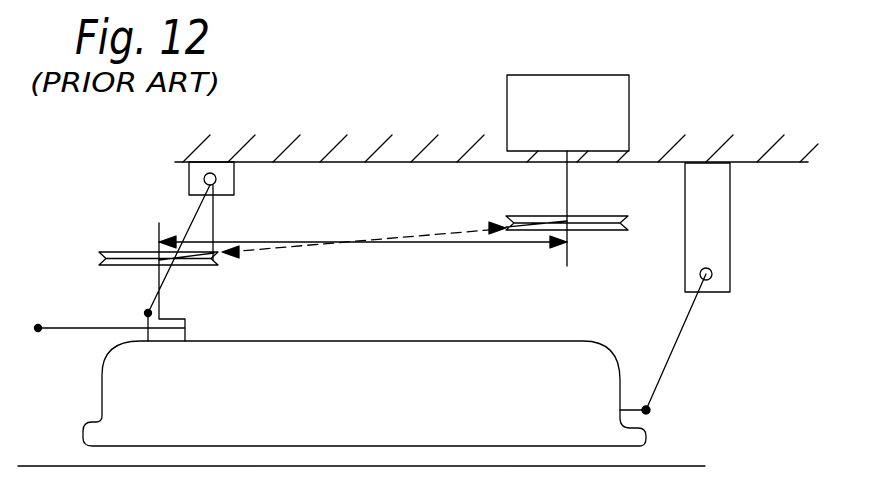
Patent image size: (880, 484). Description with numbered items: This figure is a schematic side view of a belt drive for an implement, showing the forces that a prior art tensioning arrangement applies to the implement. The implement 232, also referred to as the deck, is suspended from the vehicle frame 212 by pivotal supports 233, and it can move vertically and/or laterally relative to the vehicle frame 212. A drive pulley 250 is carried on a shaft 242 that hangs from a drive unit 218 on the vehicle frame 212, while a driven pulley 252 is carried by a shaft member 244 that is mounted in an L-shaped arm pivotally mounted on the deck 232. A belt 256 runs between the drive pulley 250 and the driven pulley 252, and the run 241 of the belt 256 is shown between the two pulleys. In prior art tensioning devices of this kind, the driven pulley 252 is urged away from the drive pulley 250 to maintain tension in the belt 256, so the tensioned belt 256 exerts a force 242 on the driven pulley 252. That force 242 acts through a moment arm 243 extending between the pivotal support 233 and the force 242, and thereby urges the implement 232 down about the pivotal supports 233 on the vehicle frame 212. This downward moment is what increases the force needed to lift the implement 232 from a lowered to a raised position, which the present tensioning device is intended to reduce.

The vehicle frame 212 is at (412, 165).
The drive motor 218 is at (582, 122).
The implement 232 is at (390, 397).
The pivotal support 233 is at (711, 270).
The belt run 241 is at (234, 255).
The force 242 is at (568, 190).
The moment arm 243 is at (217, 228).
The shaft member 244 is at (161, 306).
The drive pulley 250 is at (590, 233).
The driven pulley 252 is at (118, 251).
The belt 256 is at (373, 205).